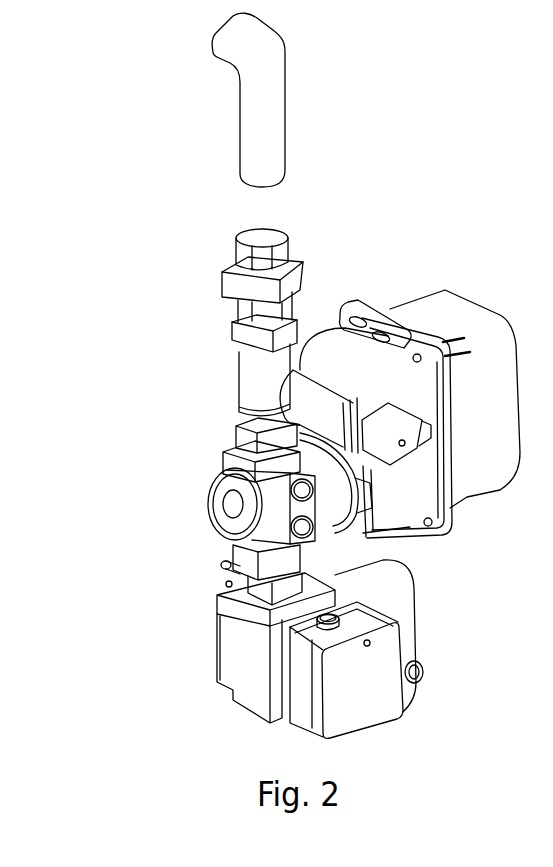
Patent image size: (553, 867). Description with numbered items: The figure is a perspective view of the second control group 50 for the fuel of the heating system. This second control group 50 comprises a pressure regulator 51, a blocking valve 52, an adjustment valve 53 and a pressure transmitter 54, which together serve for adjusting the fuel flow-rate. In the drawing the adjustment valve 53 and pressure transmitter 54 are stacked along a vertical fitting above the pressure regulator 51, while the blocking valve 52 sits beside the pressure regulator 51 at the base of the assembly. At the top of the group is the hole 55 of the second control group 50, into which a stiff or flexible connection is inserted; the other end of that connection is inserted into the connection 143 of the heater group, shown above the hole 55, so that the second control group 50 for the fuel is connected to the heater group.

The connection 143 is at (265, 113).
The hole 55 is at (258, 235).
The pressure transmitter 54 is at (238, 412).
The adjustment valve 53 is at (214, 480).
The second control group for the fuel 50 is at (171, 559).
The pressure regulator 51 is at (243, 653).
The blocking valve 52 is at (377, 684).